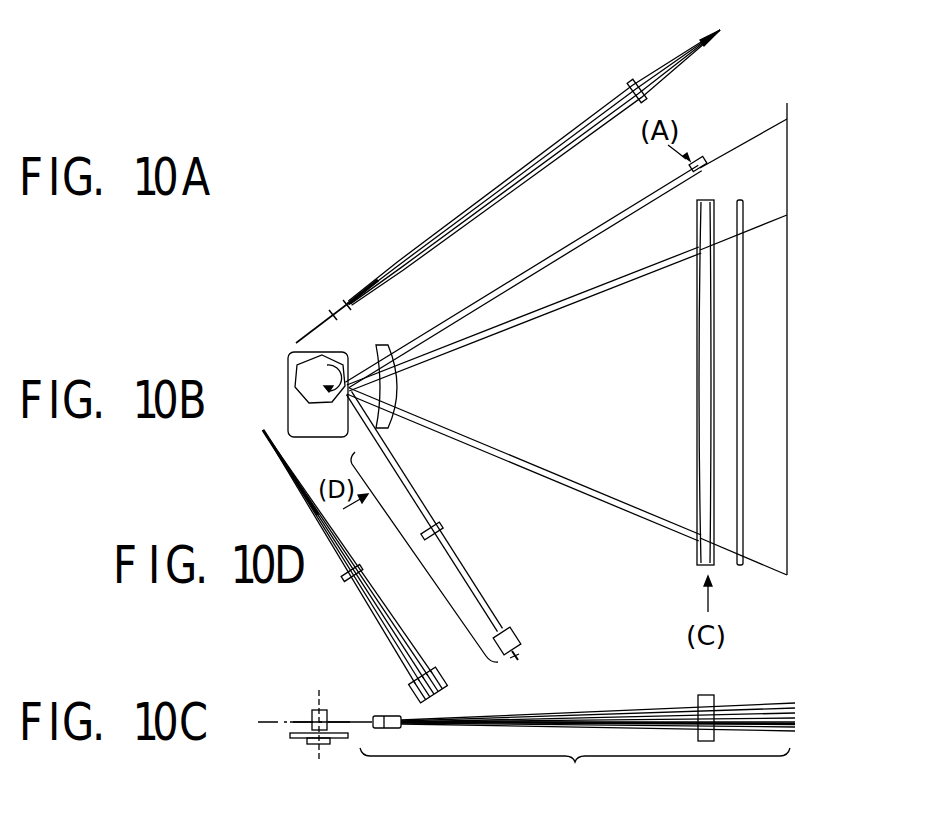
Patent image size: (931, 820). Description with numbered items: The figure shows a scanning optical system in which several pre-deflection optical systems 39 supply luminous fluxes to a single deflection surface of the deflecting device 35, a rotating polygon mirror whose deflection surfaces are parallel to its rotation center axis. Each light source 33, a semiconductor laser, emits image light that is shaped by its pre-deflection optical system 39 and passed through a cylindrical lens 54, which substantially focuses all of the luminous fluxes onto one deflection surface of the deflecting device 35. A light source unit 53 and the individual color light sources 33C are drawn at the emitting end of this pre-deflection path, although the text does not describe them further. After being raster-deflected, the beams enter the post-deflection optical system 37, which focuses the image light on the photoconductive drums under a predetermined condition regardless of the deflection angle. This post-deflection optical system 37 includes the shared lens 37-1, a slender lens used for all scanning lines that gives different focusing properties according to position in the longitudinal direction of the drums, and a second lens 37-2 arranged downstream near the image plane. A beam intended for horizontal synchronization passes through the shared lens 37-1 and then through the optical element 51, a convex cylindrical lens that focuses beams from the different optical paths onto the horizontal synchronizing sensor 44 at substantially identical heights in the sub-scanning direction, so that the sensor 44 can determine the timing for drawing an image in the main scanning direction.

In FIG. 10A, the optical element 51 is at (634, 84).
In FIG. 10B, the deflecting device 35 is at (298, 372).
In FIG. 10B, the shared lens 37-1 is at (404, 380).
In FIG. 10C, the shared lens 37-1 is at (384, 728).
In FIG. 10B, the second scanning lens 37-2 is at (697, 401).
In FIG. 10C, the second scanning lens 37-2 is at (692, 695).
In FIG. 10B, the horizontal synchronizing sensor 44 is at (787, 114).
In FIG. 10D, the light sources C, K, M, Y 33C is at (424, 710).
In FIG. 10D, the pre-deflection optical system 39 is at (422, 561).
In FIG. 10D, the cylindrical lens 54 is at (436, 530).
In FIG. 10D, the light source unit 53 is at (512, 634).
In FIG. 10D, the light source 33 is at (518, 656).
In FIG. 10C, the post-deflection optical system 37 is at (575, 769).